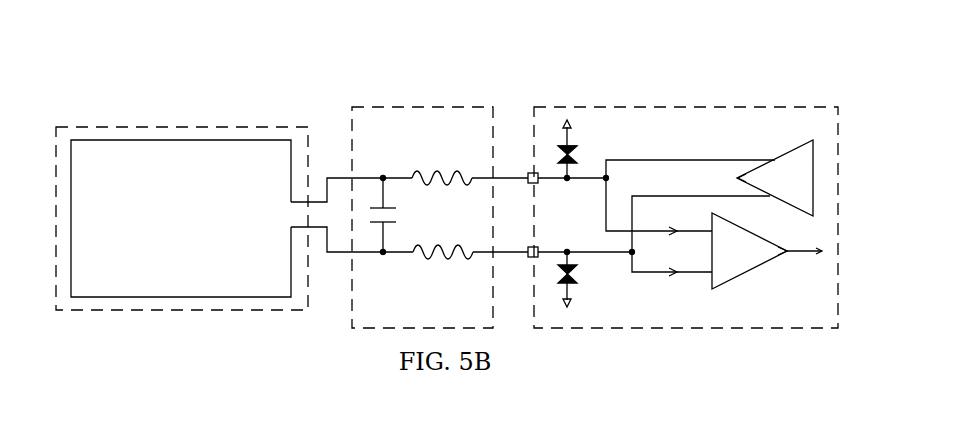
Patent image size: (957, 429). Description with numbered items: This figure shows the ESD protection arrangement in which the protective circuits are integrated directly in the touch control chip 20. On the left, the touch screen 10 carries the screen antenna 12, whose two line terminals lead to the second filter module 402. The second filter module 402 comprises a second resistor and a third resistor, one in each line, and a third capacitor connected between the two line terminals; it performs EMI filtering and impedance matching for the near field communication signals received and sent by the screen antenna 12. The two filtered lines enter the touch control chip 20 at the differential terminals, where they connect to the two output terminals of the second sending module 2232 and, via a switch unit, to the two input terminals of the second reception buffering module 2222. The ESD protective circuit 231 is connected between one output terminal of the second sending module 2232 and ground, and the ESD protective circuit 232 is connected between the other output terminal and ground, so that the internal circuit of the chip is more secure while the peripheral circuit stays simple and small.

The touch screen 10 is at (182, 198).
The screen antenna 12 is at (181, 192).
The second filter module 402 is at (440, 196).
The touch control chip 20 is at (686, 195).
The ESD protective circuit 231 is at (589, 148).
The ESD protective circuit 232 is at (590, 281).
The second sending module 2232 is at (770, 164).
The second reception buffering module 2222 is at (767, 262).